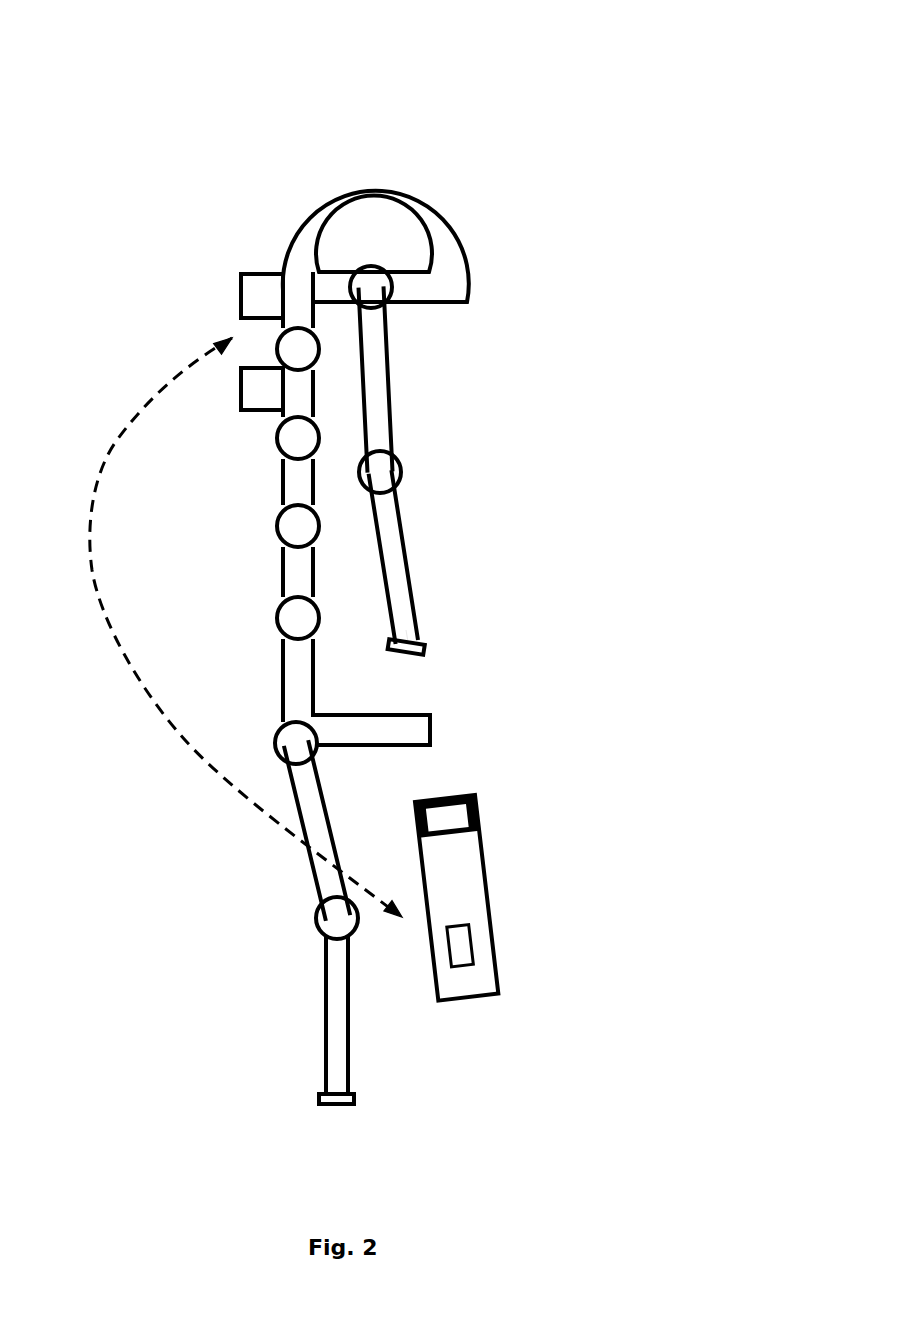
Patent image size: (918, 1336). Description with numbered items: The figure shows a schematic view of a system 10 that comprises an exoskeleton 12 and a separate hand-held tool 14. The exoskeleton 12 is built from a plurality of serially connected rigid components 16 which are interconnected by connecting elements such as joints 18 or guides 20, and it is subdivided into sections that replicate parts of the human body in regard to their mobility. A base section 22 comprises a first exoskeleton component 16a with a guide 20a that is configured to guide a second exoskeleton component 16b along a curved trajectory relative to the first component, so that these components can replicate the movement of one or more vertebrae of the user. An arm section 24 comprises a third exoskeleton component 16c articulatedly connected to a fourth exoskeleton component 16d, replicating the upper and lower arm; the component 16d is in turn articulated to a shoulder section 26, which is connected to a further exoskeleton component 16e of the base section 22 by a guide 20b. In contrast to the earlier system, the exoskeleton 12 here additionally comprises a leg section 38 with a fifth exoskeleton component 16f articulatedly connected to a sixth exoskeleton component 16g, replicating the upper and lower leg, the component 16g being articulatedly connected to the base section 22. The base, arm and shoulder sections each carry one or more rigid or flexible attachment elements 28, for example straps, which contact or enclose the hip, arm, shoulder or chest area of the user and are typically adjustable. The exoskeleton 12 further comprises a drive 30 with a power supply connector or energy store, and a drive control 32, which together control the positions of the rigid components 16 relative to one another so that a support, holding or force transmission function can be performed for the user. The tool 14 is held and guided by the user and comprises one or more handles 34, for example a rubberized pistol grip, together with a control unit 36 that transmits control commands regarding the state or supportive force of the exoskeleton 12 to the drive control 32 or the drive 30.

The system 10 is at (494, 38).
The exoskeleton 12 is at (132, 216).
The tool 14 is at (614, 774).
The rigid components 16 is at (283, 490).
The first exoskeleton component 16a is at (283, 665).
The second exoskeleton component 16b is at (283, 580).
The third exoskeleton component 16c is at (413, 600).
The fourth exoskeleton component 16d is at (390, 377).
The exoskeleton component 16e is at (280, 418).
The fifth exoskeleton component 16f is at (325, 1025).
The sixth exoskeleton component 16g is at (310, 860).
The joints 18 is at (387, 307).
The guides 20 is at (280, 455).
The guide 20a is at (280, 636).
The guide 20b is at (280, 328).
The base section 22 is at (380, 673).
The arm section 24 is at (558, 583).
The shoulder section 26 is at (558, 406).
The attachment elements 28 is at (470, 303).
The drive 30 is at (241, 393).
The drive control 32 is at (241, 303).
The handles 34 is at (477, 812).
The control unit 36 is at (469, 966).
The leg section 38 is at (440, 1058).